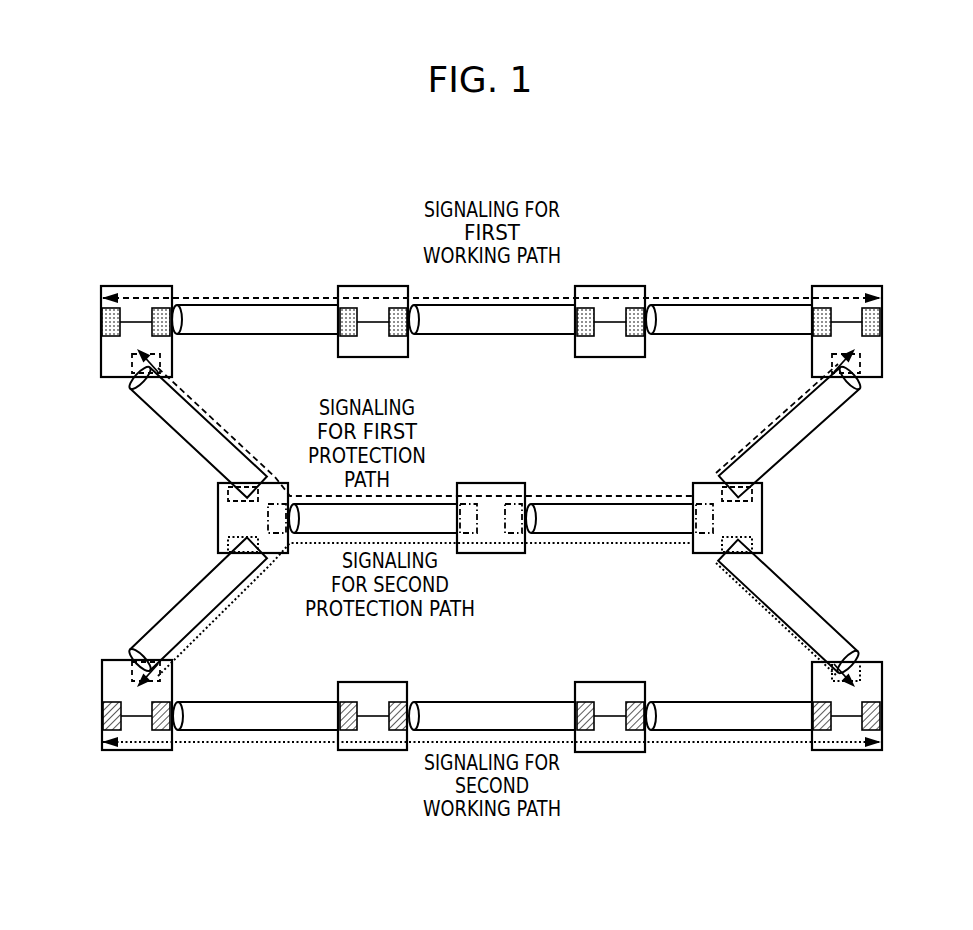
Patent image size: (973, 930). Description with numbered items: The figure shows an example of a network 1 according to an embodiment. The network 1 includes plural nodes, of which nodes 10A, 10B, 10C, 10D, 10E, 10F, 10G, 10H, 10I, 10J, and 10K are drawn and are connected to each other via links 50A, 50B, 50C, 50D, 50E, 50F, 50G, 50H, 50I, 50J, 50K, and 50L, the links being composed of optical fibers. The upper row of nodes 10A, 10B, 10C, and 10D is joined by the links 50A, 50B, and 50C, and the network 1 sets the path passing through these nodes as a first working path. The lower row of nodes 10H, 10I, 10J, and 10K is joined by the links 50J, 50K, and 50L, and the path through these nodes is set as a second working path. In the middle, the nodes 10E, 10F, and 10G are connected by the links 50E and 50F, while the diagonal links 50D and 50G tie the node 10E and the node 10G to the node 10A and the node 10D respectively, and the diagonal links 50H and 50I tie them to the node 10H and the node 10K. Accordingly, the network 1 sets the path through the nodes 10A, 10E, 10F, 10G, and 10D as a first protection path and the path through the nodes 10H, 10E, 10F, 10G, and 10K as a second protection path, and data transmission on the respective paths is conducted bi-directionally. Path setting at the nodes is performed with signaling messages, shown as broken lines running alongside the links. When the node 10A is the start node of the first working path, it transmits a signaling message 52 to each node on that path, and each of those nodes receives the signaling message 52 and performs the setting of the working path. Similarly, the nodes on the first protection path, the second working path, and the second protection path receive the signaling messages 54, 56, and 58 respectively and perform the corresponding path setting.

The network 1 is at (56, 197).
The node 10A is at (101, 292).
The node 10B is at (338, 292).
The node 10C is at (646, 292).
The node 10D is at (882, 292).
The node 10E is at (282, 483).
The node 10F is at (526, 490).
The node 10G is at (700, 483).
The node 10H is at (102, 742).
The node 10I is at (338, 744).
The node 10J is at (608, 682).
The node 10K is at (882, 665).
The link 50A is at (203, 304).
The link 50B is at (491, 318).
The link 50C is at (790, 320).
The link 50D is at (168, 417).
The link 50E is at (440, 505).
The link 50F is at (662, 512).
The link 50G is at (818, 417).
The link 50H is at (168, 622).
The link 50I is at (818, 622).
The link 50J is at (253, 704).
The link 50K is at (488, 706).
The link 50L is at (722, 706).
The signaling message 52 is at (738, 297).
The signaling message 54 is at (625, 494).
The signaling message 56 is at (728, 744).
The signaling message 58 is at (602, 546).